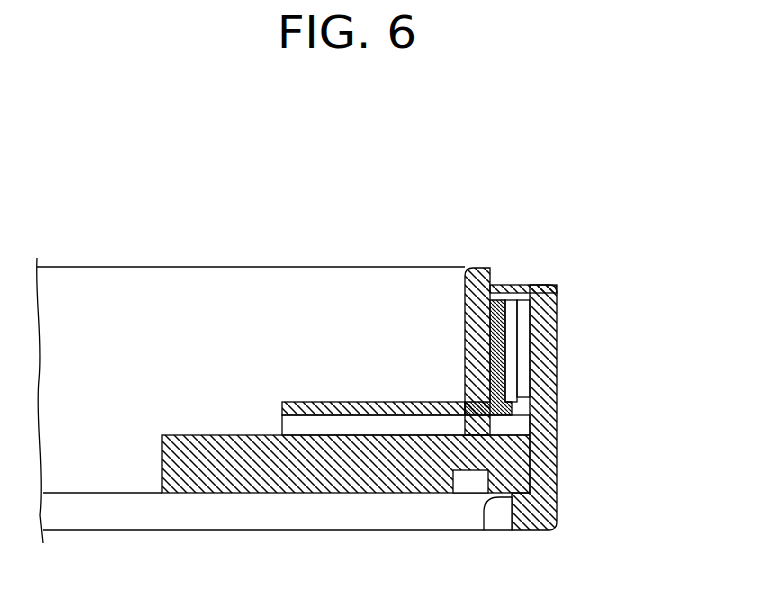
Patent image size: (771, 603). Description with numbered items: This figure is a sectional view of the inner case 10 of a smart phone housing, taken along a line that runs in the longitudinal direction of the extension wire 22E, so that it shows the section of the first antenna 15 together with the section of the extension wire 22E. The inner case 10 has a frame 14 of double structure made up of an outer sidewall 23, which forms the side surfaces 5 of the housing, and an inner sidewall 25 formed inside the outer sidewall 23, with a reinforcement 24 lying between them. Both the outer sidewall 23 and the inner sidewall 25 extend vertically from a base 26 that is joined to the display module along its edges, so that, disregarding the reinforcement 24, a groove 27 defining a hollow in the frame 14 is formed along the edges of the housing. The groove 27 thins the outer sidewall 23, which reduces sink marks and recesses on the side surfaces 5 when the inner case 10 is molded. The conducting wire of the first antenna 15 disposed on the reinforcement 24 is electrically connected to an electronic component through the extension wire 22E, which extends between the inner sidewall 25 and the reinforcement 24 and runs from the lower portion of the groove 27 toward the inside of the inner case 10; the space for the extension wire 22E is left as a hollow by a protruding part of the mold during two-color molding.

The inner case 10 is at (615, 295).
The side surfaces 5 is at (558, 440).
The inner sidewall 25 is at (462, 323).
The reinforcement 24 is at (560, 340).
The first antenna 15 is at (515, 283).
The frame 14 is at (462, 384).
The extension wire 22E is at (360, 400).
The outer sidewall 23 is at (558, 377).
The groove 27 is at (557, 405).
The base 26 is at (492, 498).